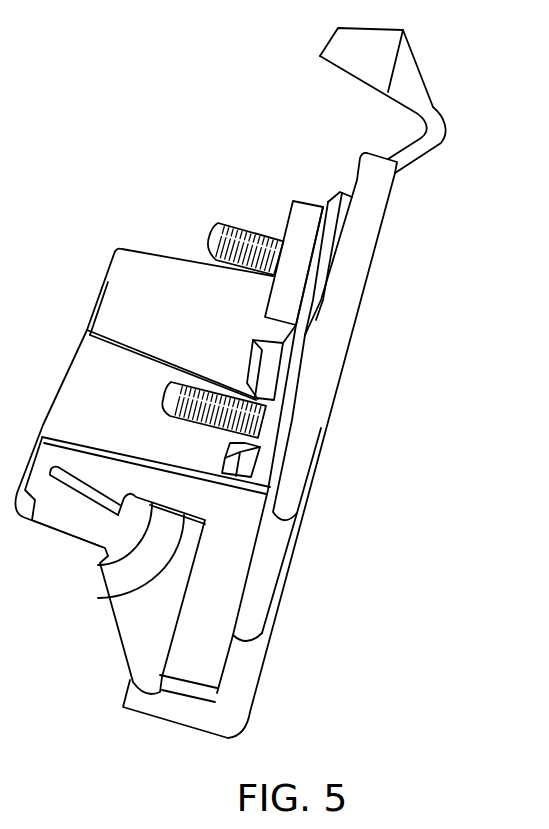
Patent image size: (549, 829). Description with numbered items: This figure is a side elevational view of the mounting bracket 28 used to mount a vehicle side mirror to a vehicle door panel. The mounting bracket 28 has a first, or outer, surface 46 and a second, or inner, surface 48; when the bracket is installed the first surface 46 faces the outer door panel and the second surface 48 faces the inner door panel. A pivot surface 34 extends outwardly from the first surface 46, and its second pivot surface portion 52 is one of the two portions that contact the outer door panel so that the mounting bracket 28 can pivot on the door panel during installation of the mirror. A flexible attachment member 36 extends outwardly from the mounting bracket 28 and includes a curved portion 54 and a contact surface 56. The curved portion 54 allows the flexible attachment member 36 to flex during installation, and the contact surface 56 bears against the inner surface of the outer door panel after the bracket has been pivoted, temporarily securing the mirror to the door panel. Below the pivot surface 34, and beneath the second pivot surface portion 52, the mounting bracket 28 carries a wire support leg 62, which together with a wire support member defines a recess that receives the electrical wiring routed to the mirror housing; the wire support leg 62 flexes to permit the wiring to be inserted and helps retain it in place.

The mounting bracket 28 is at (278, 608).
The pivot surface 34 is at (273, 523).
The flexible attachment member 36 is at (419, 70).
The first surface 46 is at (358, 171).
The second surface 48 is at (360, 302).
The second pivot surface portion 52 is at (103, 593).
The curved portion 54 is at (442, 147).
The contact surface 56 is at (325, 47).
The wire support leg 62 is at (197, 657).